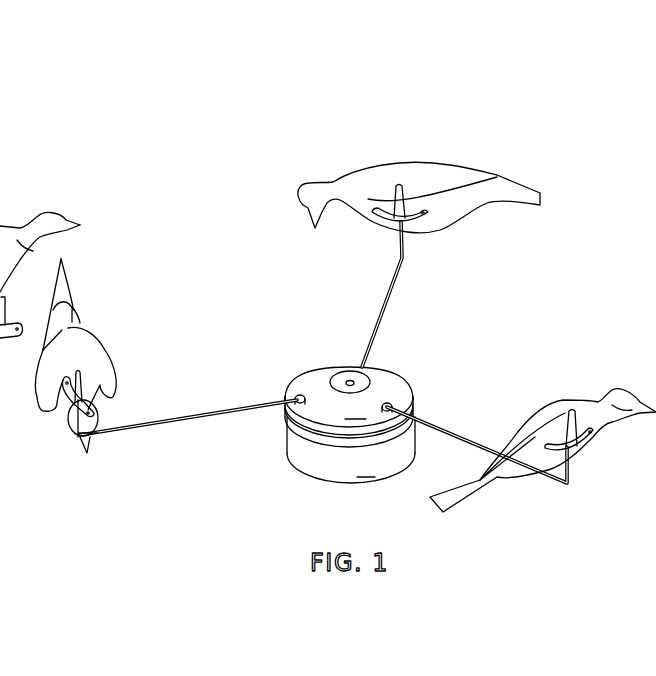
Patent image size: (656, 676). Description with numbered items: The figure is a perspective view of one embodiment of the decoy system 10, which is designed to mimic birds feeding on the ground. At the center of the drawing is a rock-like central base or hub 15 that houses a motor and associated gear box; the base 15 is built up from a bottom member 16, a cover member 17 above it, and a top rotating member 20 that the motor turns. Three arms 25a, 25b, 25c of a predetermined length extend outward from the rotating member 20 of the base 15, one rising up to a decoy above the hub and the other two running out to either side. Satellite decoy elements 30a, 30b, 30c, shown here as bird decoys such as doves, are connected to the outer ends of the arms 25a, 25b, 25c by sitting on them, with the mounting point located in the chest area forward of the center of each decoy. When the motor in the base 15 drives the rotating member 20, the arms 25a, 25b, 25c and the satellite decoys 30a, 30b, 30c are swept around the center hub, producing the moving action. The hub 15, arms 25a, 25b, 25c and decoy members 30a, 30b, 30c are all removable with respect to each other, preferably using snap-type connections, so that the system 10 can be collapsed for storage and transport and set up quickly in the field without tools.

The decoy system 10 is at (328, 301).
The central base or hub 15 is at (317, 461).
The bottom member 16 is at (312, 477).
The cover member 17 is at (285, 433).
The rotating member 20 is at (349, 397).
The arm 25a is at (385, 310).
The arm 25b is at (183, 425).
The arm 25c is at (442, 427).
The satellite decoy element 30a is at (463, 227).
The satellite decoy element 30b is at (58, 417).
The satellite decoy element 30c is at (557, 395).